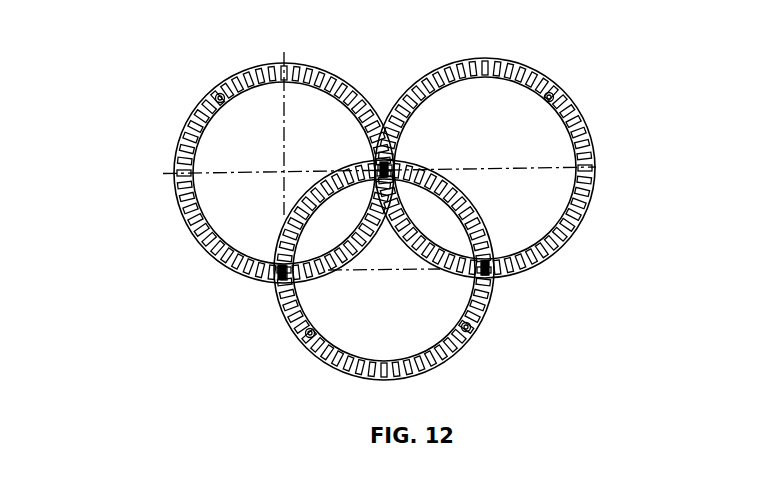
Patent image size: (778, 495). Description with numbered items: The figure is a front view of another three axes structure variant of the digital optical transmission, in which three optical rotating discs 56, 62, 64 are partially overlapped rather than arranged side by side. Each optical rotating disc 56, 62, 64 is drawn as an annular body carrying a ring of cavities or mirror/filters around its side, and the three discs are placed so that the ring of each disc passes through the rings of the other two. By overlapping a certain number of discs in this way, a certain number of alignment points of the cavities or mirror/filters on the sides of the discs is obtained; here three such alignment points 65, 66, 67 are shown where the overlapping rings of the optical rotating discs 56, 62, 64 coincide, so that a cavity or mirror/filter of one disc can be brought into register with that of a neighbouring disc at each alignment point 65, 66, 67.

The optical rotating disc 56 is at (187, 125).
The optical rotating disc 62 is at (572, 102).
The optical rotating disc 64 is at (481, 325).
The alignment point 65 is at (492, 267).
The alignment point 66 is at (378, 169).
The alignment point 67 is at (275, 280).